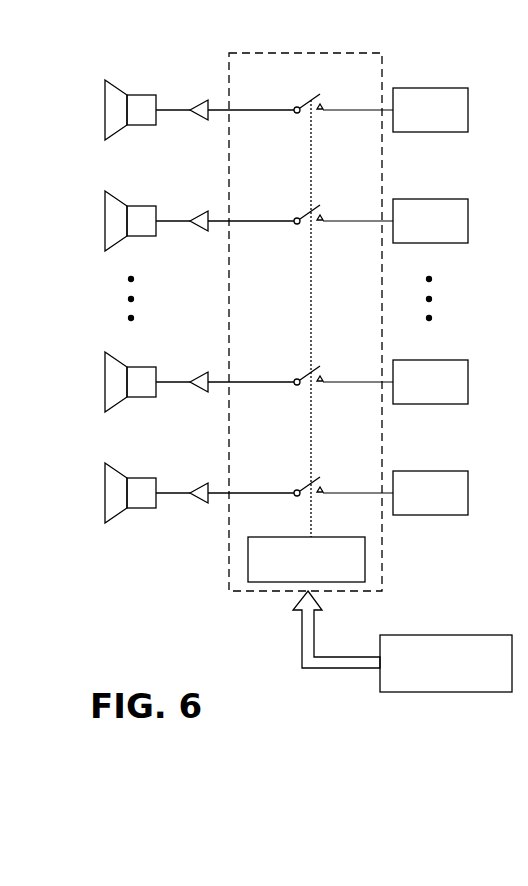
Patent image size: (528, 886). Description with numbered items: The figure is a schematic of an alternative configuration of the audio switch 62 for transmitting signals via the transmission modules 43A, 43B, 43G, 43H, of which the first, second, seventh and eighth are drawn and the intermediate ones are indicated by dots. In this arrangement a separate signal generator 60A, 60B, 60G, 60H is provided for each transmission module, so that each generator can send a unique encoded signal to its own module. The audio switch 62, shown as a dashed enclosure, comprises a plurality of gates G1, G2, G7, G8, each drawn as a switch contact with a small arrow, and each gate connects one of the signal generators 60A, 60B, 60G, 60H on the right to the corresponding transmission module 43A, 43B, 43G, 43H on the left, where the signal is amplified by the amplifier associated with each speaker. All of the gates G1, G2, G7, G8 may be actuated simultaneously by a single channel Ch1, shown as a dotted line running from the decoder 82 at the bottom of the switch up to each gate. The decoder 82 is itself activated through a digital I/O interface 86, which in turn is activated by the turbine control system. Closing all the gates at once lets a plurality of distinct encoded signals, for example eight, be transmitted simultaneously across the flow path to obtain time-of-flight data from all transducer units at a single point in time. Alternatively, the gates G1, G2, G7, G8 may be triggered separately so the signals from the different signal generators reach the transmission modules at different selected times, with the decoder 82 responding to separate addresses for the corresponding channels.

The transmission module 43A is at (117, 74).
The transmission module 43B is at (117, 185).
The transmission module 43G is at (117, 346).
The transmission module 43H is at (117, 457).
The signal gate G1 is at (296, 105).
The signal gate G2 is at (296, 216).
The signal gate G7 is at (296, 377).
The signal gate G8 is at (296, 488).
The signal generator 60A is at (415, 119).
The signal generator 60B is at (415, 230).
The signal generator 60G is at (415, 391).
The signal generator 60H is at (415, 502).
The channel Ch1 is at (312, 318).
The decoder 82 is at (365, 555).
The digital I/O interface 86 is at (425, 692).
The audio switch 62 is at (191, 595).